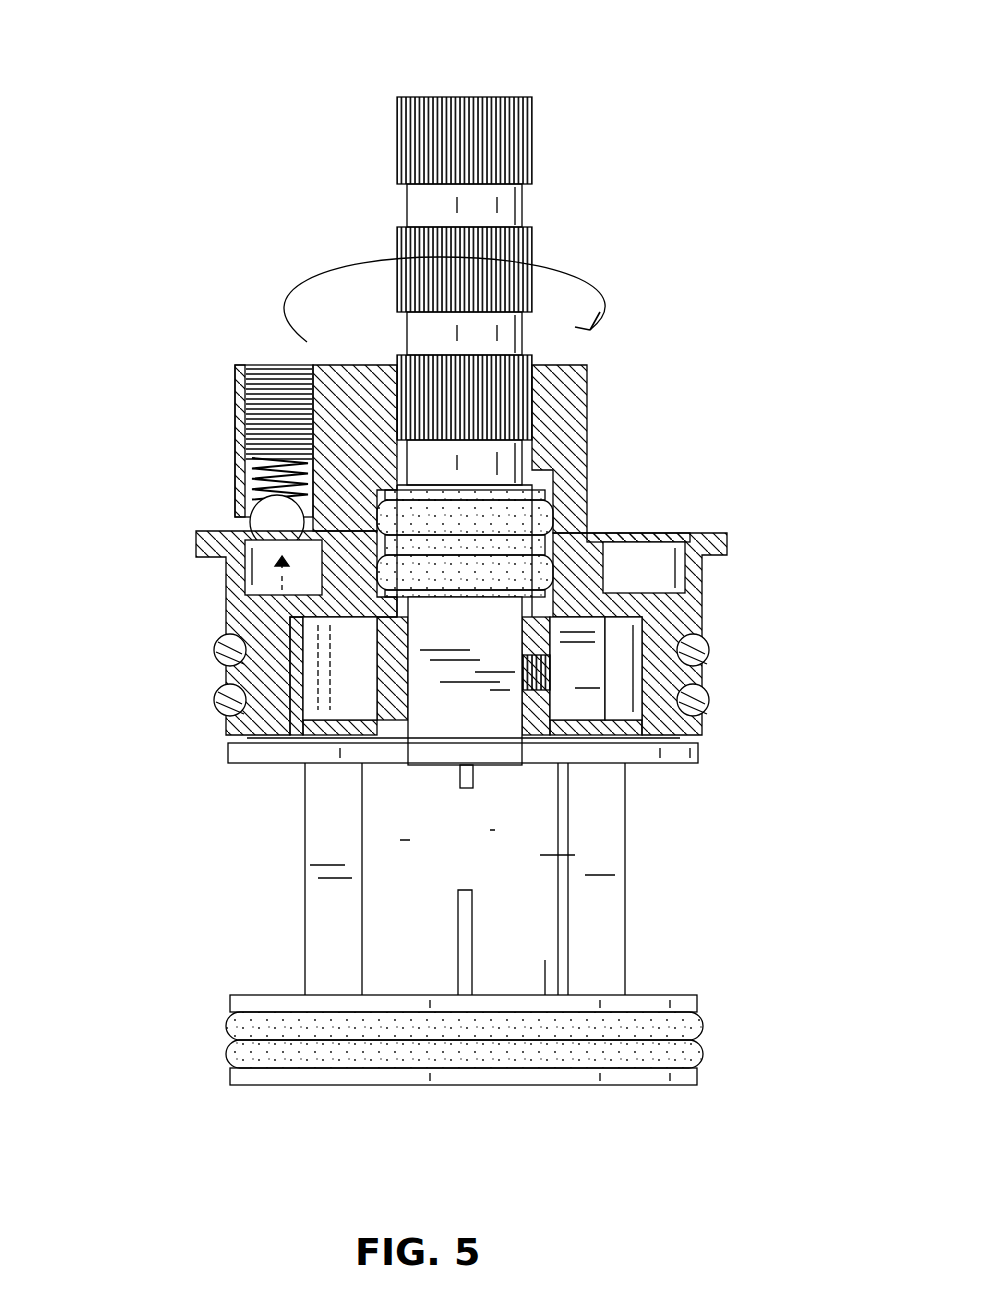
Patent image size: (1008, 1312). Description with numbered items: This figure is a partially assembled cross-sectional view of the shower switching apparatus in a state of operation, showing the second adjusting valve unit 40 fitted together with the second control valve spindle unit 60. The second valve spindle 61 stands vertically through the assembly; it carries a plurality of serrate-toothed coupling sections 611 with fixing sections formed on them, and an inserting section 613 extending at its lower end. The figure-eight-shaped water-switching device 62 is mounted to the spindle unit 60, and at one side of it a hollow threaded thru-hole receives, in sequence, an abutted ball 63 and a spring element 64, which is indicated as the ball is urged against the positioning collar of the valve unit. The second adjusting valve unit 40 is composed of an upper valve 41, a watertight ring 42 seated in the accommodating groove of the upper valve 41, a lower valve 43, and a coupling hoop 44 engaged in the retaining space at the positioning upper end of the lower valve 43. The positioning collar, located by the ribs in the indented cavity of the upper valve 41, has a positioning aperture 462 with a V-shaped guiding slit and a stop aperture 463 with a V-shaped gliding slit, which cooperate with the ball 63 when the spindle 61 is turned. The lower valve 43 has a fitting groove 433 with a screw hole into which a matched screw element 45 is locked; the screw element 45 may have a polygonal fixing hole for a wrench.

The second adjusting valve unit 40 is at (191, 694).
The upper valve 41 is at (705, 592).
The watertight ring 42 is at (588, 505).
The lower valve 43 is at (303, 825).
The coupling hoop 44 is at (693, 742).
The screw element 45 is at (548, 677).
The fitting groove 433 is at (525, 705).
The positioning aperture 462 is at (251, 563).
The stop aperture 463 is at (650, 567).
The second control valve spindle unit 60 is at (570, 193).
The second valve spindle 61 is at (455, 330).
The serrate-toothed coupling section 611 is at (518, 140).
The inserting section 613 is at (437, 710).
The water-switching device 62 is at (224, 421).
The abutted ball 63 is at (247, 526).
The spring element 64 is at (258, 488).